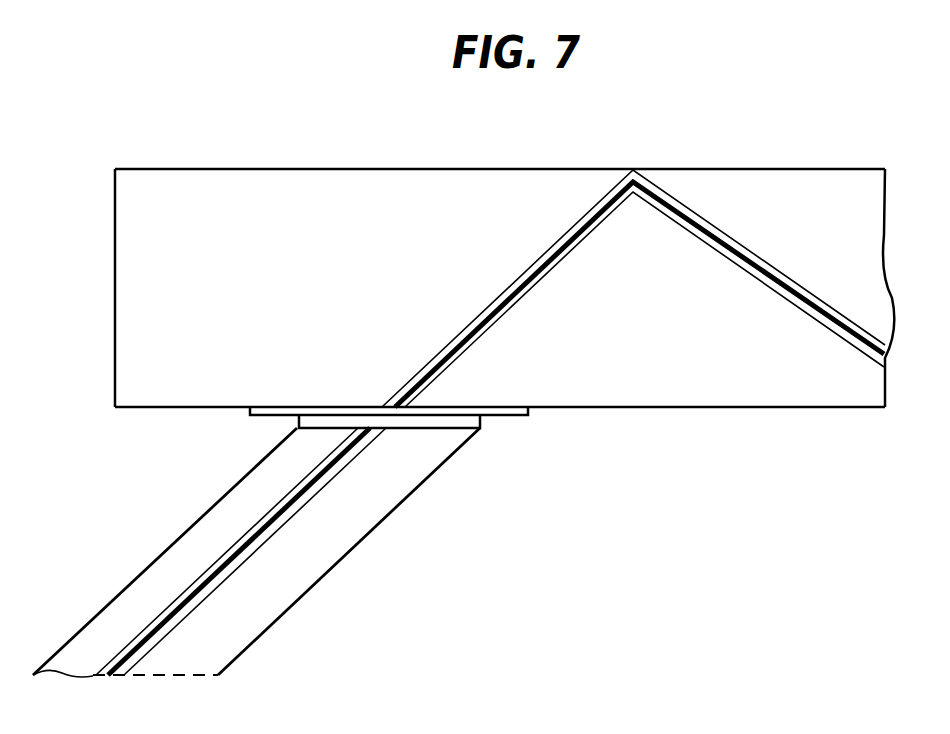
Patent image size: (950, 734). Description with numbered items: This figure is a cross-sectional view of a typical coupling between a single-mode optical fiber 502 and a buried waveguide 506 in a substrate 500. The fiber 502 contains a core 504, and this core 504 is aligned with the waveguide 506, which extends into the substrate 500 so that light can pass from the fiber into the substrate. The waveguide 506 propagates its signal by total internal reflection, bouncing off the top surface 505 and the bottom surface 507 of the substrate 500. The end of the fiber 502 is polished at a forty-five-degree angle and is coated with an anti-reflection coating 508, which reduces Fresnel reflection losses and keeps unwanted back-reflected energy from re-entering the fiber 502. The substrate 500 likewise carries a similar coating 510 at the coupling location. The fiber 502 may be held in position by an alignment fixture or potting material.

The substrate 500 is at (133, 355).
The top surface 505 is at (242, 167).
The bottom surface 507 is at (795, 409).
The buried waveguide 506 is at (512, 303).
The coating 510 is at (517, 417).
The anti-reflection coating 508 is at (460, 428).
The single-mode optical fiber 502 is at (307, 585).
The core 504 is at (175, 620).